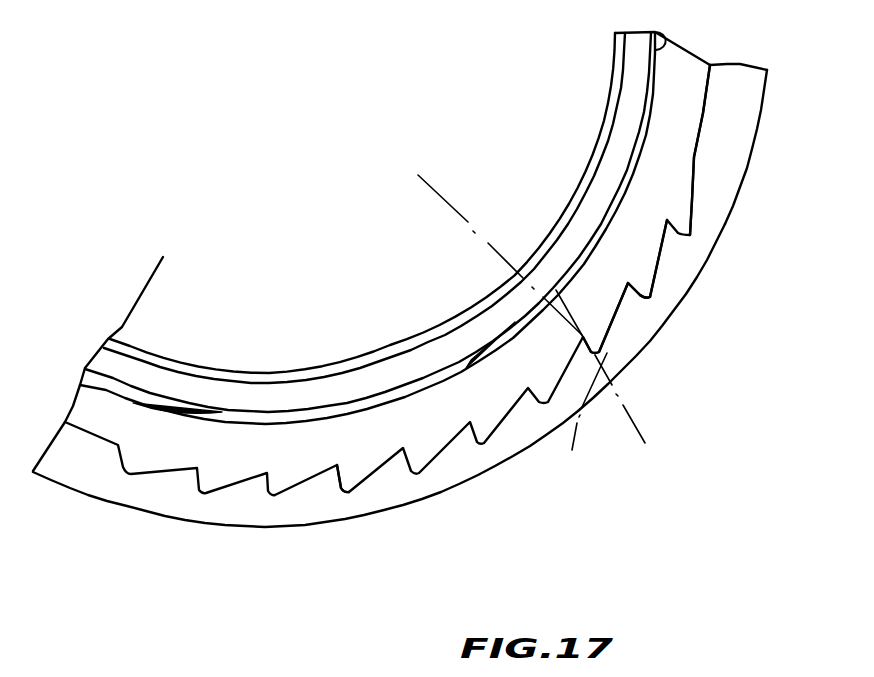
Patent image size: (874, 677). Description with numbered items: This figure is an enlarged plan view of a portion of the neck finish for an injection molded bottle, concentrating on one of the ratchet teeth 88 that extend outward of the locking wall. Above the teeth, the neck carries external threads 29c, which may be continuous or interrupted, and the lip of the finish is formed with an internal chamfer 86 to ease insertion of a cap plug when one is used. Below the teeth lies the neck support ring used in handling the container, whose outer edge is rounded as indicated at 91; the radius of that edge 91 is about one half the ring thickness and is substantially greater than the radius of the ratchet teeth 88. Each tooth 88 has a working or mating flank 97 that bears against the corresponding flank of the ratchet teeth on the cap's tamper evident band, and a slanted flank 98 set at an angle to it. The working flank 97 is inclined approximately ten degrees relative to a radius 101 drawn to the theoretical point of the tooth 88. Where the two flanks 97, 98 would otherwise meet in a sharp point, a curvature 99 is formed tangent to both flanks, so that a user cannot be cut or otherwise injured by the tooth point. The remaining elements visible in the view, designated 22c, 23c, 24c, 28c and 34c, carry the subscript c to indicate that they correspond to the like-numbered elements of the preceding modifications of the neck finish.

The clutch plate segment 22c is at (593, 97).
The inner arcuate surface 23c is at (540, 238).
The inner band 24c is at (640, 53).
The end notch 28c is at (667, 33).
The external threads 29c is at (623, 192).
The end flank 34c is at (687, 110).
The internal chamfer 86 is at (597, 152).
The ratchet teeth 88 is at (647, 277).
The rounded outer edge 91 is at (722, 211).
The working or mating flank 97 is at (608, 414).
The slanted flank 98 is at (650, 297).
The curvature 99 is at (618, 322).
The radius 101 is at (488, 243).